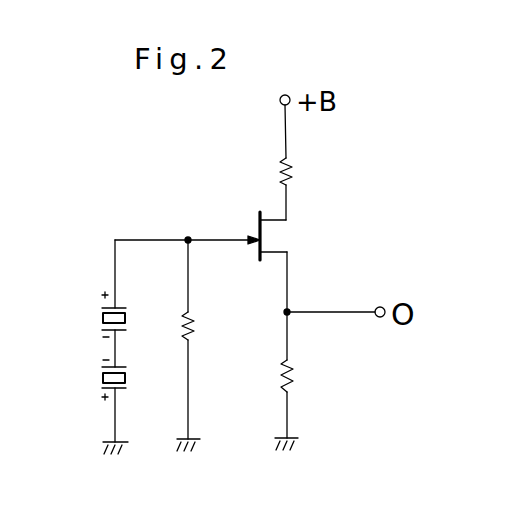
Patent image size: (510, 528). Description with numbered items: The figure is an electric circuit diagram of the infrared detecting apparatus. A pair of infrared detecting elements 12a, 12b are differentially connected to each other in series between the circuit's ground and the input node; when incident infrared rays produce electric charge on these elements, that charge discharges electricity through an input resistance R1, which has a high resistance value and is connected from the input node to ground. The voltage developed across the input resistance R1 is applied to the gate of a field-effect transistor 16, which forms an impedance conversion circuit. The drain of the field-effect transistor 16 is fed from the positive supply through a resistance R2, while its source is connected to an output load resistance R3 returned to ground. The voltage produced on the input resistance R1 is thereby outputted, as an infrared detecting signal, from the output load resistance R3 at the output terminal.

The field-effect transistor 16 is at (258, 216).
The infrared detecting element 12a is at (101, 316).
The infrared detecting element 12b is at (101, 378).
The input resistance R1 is at (209, 328).
The resistor R2 is at (308, 175).
The output load resistance R3 is at (309, 378).